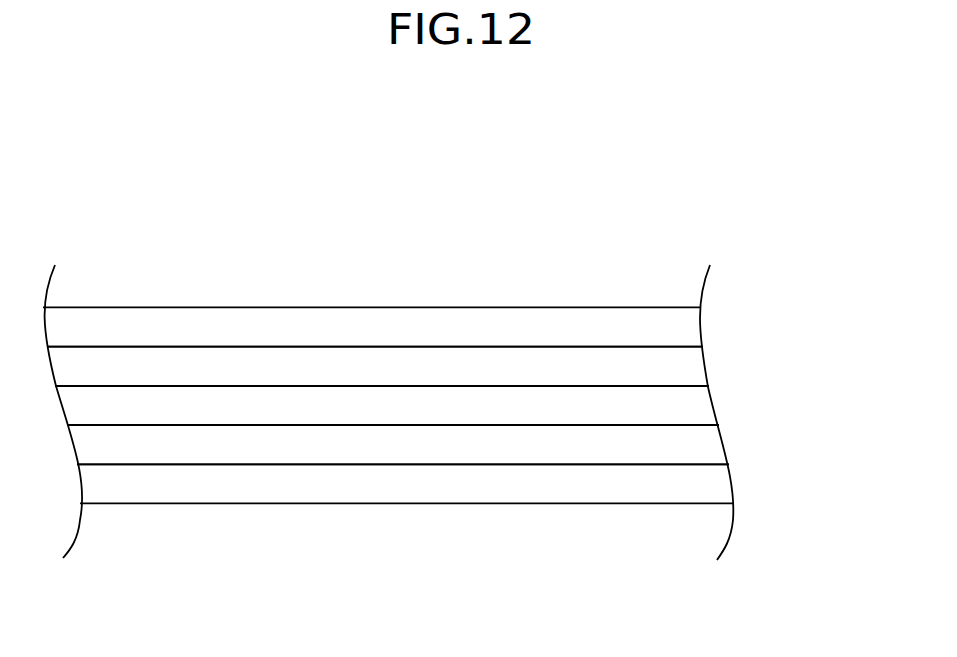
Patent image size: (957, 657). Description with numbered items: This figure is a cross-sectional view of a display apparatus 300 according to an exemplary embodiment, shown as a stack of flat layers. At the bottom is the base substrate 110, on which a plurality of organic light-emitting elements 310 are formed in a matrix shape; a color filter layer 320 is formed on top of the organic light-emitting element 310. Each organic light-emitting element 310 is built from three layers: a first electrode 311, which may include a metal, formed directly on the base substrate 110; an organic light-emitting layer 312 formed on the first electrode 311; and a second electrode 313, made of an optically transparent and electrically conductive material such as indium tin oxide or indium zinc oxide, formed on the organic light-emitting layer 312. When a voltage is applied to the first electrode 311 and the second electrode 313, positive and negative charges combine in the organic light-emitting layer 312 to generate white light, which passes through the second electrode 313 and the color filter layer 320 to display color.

The touch screen panel stack 300 is at (391, 277).
The color filter layer 320 is at (692, 327).
The second electrode 313 is at (695, 368).
The organic light-emitting layer 312 is at (707, 407).
The first electrode 311 is at (712, 448).
The organic light-emitting element 310 is at (827, 380).
The base substrate 110 is at (250, 488).